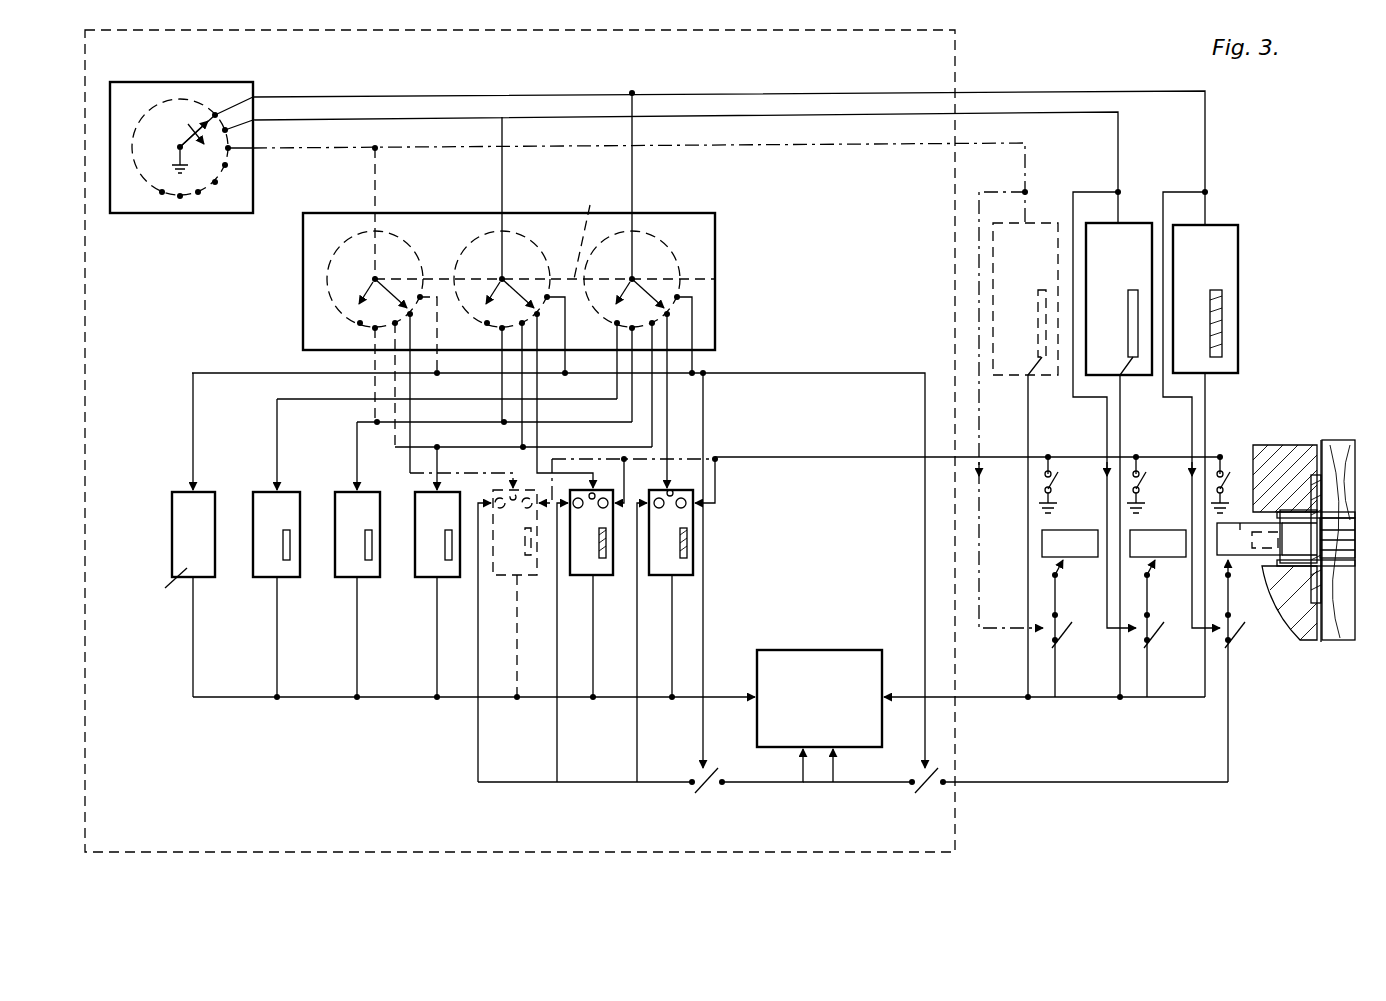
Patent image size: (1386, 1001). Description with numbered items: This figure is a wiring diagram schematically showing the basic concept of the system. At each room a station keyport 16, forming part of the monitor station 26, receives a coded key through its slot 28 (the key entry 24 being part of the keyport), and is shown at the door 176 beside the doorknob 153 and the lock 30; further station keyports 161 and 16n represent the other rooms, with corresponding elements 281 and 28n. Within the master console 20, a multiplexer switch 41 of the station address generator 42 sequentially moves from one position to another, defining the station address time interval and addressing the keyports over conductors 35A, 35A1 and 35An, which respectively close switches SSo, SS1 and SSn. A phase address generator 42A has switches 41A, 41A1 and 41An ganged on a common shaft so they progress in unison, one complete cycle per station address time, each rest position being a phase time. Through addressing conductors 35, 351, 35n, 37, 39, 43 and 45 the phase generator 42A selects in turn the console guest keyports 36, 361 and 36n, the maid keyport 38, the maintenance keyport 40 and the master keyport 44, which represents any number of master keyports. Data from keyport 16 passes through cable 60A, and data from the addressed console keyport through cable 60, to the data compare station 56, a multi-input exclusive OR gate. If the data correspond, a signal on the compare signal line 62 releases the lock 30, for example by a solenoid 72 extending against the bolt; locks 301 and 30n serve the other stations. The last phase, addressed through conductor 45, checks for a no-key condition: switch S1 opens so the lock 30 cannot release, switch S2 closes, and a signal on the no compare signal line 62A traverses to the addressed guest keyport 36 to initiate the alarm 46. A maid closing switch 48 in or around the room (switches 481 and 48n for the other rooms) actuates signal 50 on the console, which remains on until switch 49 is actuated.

The master console 20 is at (150, 860).
The multiplexer switch 41 is at (190, 142).
The station address generator 42 is at (250, 85).
The phase address generator 42A is at (716, 268).
The switch 41A is at (672, 282).
The switch 41A1 is at (508, 274).
The switch 41An is at (381, 274).
The conductor 35A is at (975, 91).
The addressing cable 35A1 is at (912, 113).
The addressing cable 35An is at (850, 150).
The conductor 45 is at (192, 434).
The addressing conductor 43 is at (277, 442).
The master keyport 44 is at (270, 565).
The addressing conductor 39 is at (357, 446).
The maintenance keyport 40 is at (352, 565).
The addressing conductor 37 is at (430, 476).
The maid keyport 38 is at (432, 565).
The addressing conductor 35 is at (668, 440).
The addressing conductor 351 is at (548, 447).
The addressing conductor 35n is at (425, 446).
The console guest keyport 36 is at (682, 565).
The console guest keyport 361 is at (603, 565).
The key code register 36n is at (525, 560).
The alarm 46 is at (658, 498).
The signal 50 is at (683, 498).
The switch 49 is at (670, 497).
The switch 48 is at (1228, 470).
The lock release switch 481 is at (1146, 470).
The lock release switch 48n is at (1058, 470).
The station keyport 16 is at (1233, 232).
The keyport 161 is at (1130, 238).
The station keyport 16n is at (1035, 240).
The key slot 24 is at (1224, 310).
The monitor station 26 is at (1226, 292).
The slot 28 is at (1224, 326).
The keyport output line 281 is at (1134, 362).
The keyport output line 28n is at (1040, 362).
The lock 30 is at (1262, 562).
The lock 301 is at (1168, 532).
The lock 30n is at (1082, 532).
The solenoid 72 is at (1241, 521).
The door 176 is at (1330, 443).
The doorknob 153 is at (1340, 642).
The data compare station 56 is at (856, 650).
The cable 60 is at (724, 690).
The cable 60A is at (906, 690).
The compare signal line 62 is at (862, 790).
The no compare signal line 62A is at (765, 790).
The switch S1 is at (930, 790).
The switch S2 is at (710, 790).
The switch SSn is at (1060, 645).
The switch SS1 is at (1150, 645).
The switch SSo is at (1235, 645).